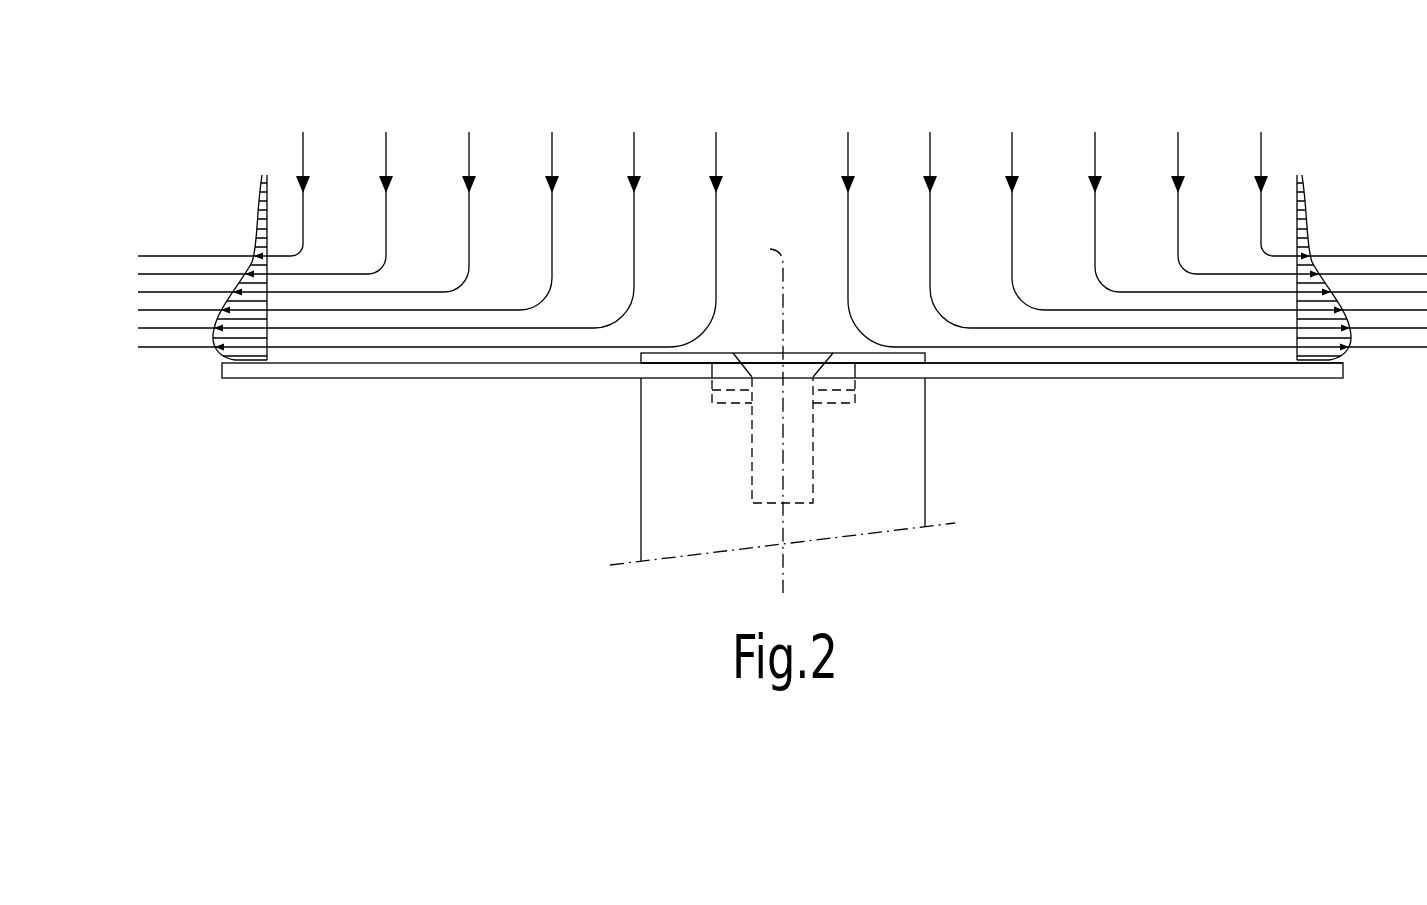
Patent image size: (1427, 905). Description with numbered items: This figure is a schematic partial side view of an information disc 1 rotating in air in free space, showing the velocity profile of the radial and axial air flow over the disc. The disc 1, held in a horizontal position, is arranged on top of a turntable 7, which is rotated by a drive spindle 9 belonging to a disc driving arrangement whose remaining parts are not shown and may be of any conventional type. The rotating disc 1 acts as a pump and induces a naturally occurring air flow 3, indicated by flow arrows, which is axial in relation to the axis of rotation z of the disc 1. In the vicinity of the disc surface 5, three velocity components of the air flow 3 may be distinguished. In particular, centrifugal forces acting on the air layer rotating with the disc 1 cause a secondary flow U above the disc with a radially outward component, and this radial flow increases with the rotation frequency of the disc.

The disc 1 is at (1348, 377).
The air flow 3 is at (275, 90).
The disc surface 5 is at (995, 362).
The turntable 7 is at (912, 442).
The drive spindle 9 is at (772, 436).
The secondary flow U is at (1313, 270).
The axis of rotation z is at (770, 249).